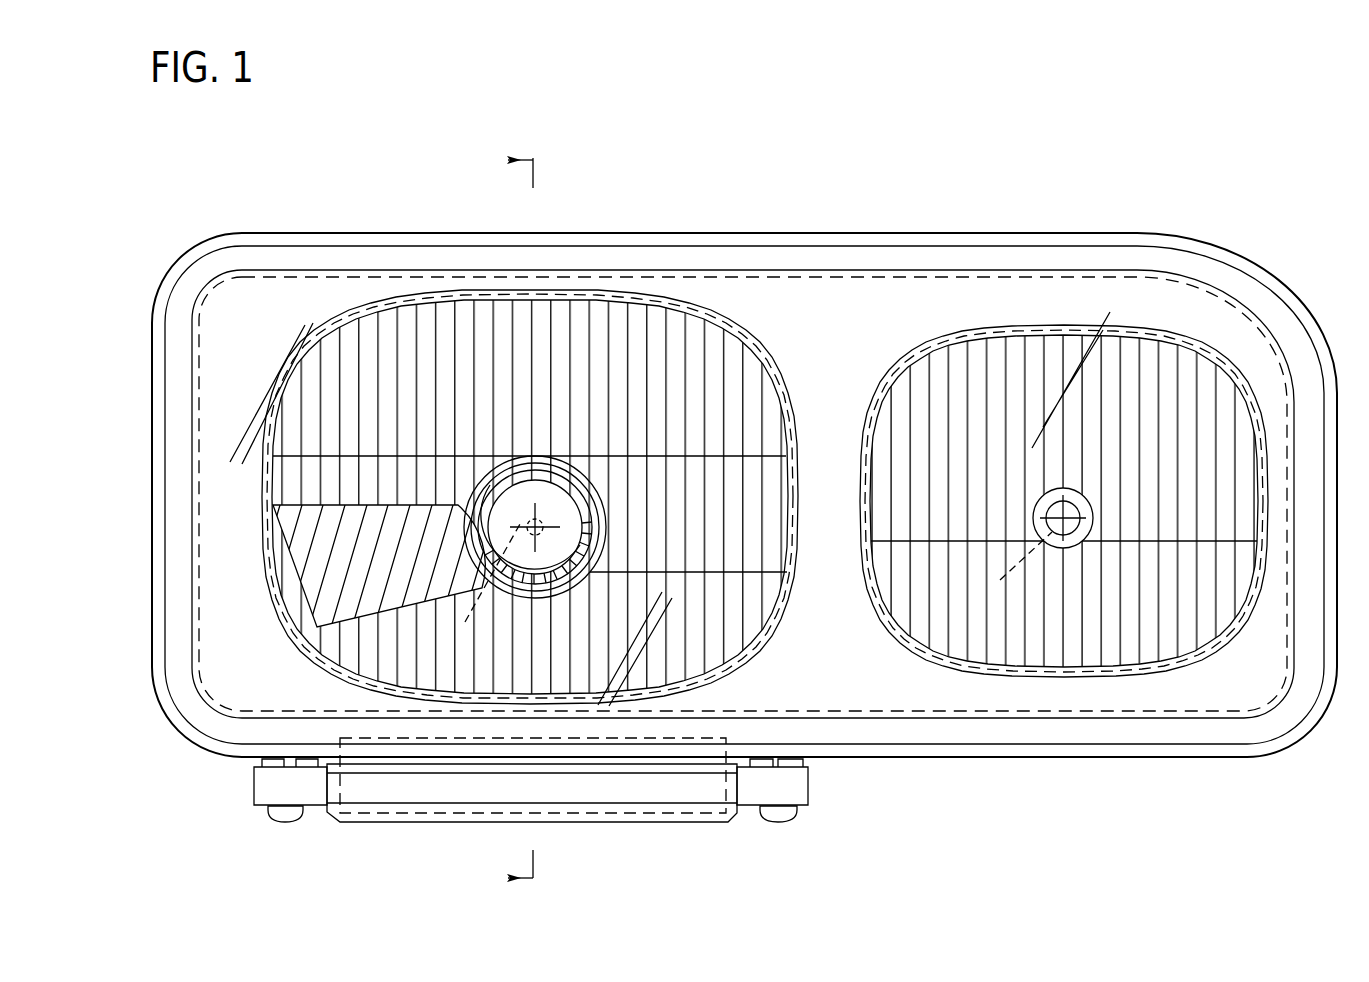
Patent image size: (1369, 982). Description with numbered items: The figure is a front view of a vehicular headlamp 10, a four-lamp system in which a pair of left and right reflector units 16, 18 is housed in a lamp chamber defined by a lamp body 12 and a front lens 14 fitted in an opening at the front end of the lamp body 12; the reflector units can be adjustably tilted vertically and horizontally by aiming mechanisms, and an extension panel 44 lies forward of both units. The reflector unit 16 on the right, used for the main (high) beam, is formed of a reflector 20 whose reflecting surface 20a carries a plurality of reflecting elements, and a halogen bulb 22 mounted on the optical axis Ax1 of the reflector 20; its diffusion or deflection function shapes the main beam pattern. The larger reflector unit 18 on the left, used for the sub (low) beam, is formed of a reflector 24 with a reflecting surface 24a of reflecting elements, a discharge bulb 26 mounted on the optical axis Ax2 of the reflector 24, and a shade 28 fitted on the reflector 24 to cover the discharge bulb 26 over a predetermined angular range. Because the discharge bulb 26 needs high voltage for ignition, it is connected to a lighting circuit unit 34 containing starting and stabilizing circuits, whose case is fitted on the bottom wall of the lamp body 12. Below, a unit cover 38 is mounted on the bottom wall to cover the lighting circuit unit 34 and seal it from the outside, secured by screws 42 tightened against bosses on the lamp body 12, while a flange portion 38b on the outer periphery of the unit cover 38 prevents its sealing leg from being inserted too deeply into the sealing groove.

The vehicular headlamp 10 is at (1167, 165).
The lamp body 12 is at (792, 222).
The front lens 14 is at (878, 265).
The reflector unit 16 is at (1192, 315).
The reflector unit 18 is at (730, 523).
The reflector 20 is at (1035, 515).
The reflecting surface 20a is at (937, 620).
The halogen bulb 22 is at (1078, 503).
The reflector 24 is at (555, 445).
The reflecting surface 24a is at (733, 430).
The discharge bulb 26 is at (545, 516).
The shade 28 is at (517, 498).
The lighting circuit unit 34 is at (556, 812).
The unit cover 38 is at (531, 826).
The flange portion 38b is at (430, 768).
The screws 42 is at (283, 822).
The extension panel 44 is at (995, 300).
The optical axis Ax1 is at (1002, 567).
The optical axis Ax2 is at (483, 589).